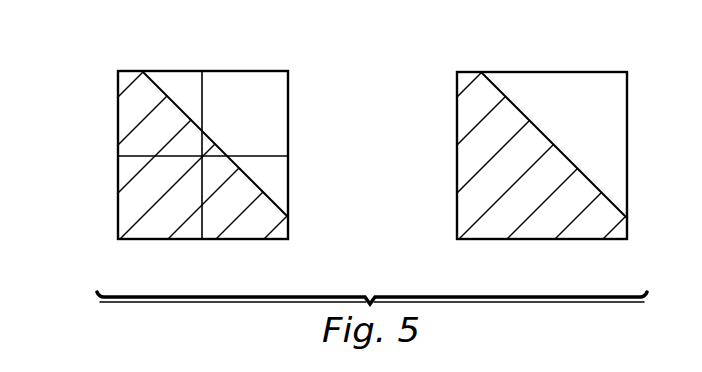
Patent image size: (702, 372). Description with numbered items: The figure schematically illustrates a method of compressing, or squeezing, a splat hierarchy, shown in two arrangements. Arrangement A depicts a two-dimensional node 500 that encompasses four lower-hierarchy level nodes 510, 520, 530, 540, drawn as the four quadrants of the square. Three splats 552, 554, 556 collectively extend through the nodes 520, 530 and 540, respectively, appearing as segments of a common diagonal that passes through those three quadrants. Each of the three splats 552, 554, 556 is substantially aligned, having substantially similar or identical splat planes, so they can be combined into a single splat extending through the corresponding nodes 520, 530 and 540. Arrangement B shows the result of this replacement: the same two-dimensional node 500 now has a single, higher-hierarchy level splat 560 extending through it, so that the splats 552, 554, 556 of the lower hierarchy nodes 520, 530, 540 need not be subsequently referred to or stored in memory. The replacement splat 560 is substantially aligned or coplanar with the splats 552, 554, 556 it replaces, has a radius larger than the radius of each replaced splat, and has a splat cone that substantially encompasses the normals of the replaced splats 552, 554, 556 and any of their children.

The 2-dimensional node 500 is at (327, 149).
The lower-hierarchy level node 510 is at (127, 208).
The lower-hierarchy level node 520 is at (282, 227).
The lower-hierarchy level node 530 is at (127, 115).
The lower-hierarchy level node 540 is at (280, 108).
The splat 552 is at (273, 198).
The splat 554 is at (157, 85).
The splat 556 is at (236, 127).
The higher-hierarchy level splat 560 is at (547, 130).